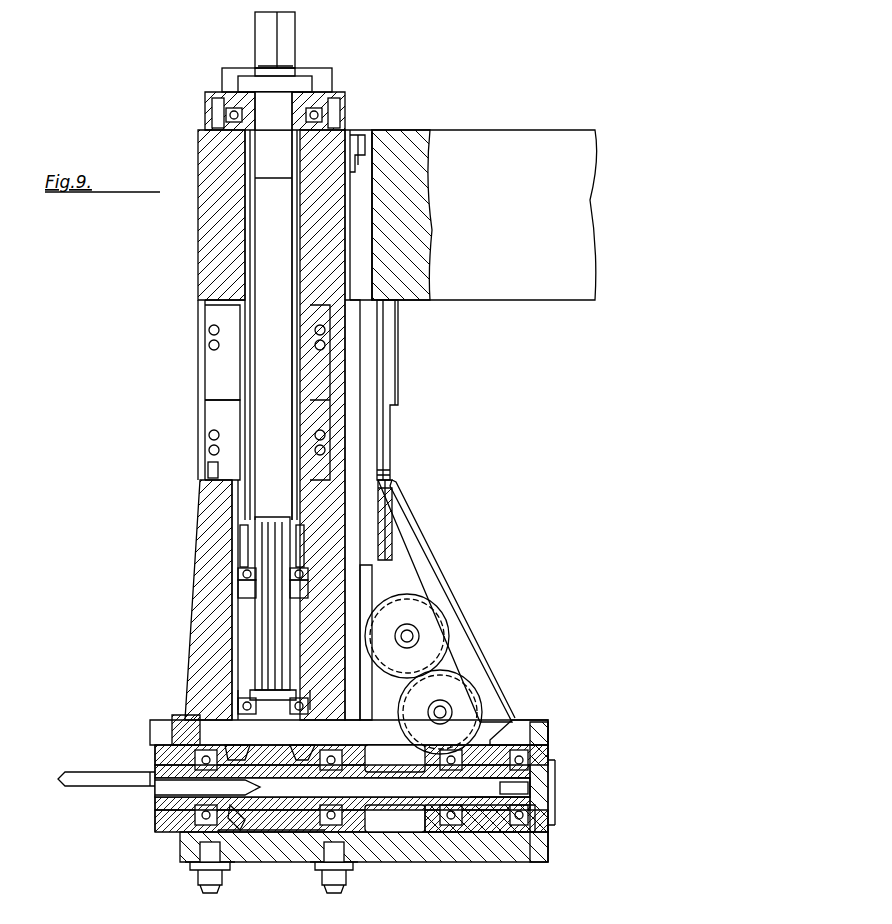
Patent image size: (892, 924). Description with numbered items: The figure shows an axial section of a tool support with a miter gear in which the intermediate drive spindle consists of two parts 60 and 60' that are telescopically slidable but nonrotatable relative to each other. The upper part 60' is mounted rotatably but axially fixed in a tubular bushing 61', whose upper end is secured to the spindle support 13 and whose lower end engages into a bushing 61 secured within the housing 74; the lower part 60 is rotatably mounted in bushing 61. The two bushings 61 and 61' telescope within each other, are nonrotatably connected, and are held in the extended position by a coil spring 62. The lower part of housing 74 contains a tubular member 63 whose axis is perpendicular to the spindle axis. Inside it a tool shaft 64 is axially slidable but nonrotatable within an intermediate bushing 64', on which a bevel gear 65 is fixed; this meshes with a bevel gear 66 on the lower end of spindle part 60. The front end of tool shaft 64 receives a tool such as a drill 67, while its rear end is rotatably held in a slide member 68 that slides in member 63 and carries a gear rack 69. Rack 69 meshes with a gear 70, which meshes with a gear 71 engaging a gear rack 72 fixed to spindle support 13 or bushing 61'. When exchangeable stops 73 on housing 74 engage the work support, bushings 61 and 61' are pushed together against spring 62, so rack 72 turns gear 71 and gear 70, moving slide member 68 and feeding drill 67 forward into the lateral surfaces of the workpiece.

The spindle support 13 is at (520, 145).
The lower part of the drive spindle 60 is at (225, 615).
The upper part of the drive spindle 60' is at (242, 425).
The bushing 61 is at (224, 561).
The tubular bushing 61' is at (192, 215).
The coil spring 62 is at (208, 338).
The tubular member 63 is at (366, 742).
The tool shaft 64 is at (315, 792).
The intermediate bushing 64' is at (333, 792).
The bevel gear 65 is at (238, 822).
The bevel gear 66 is at (240, 745).
The drill 67 is at (88, 776).
The slide member 68 is at (482, 822).
The gear rack 69 is at (498, 742).
The gear 70 is at (465, 688).
The gear 71 is at (428, 612).
The gear rack 72 is at (370, 583).
The exchangeable stops 73 is at (195, 878).
The housing 74 is at (205, 595).